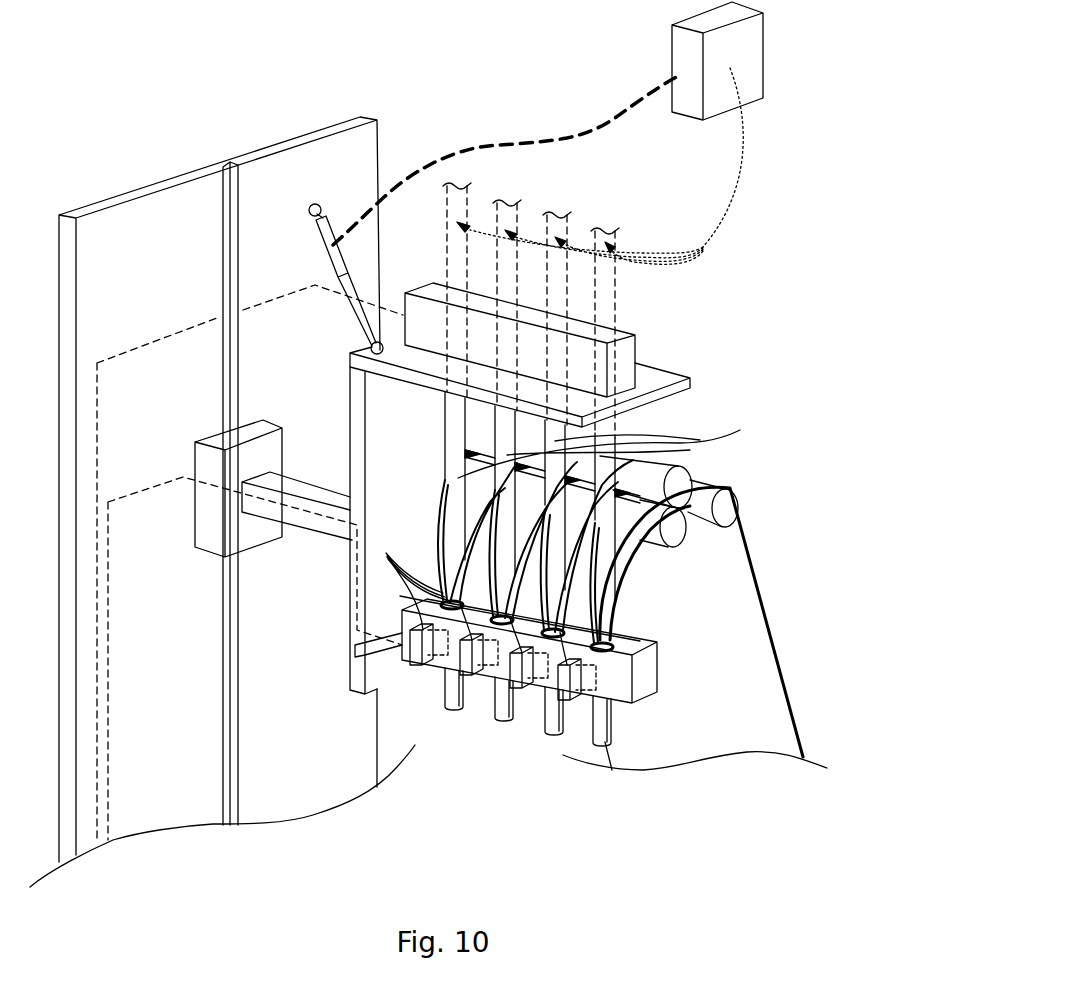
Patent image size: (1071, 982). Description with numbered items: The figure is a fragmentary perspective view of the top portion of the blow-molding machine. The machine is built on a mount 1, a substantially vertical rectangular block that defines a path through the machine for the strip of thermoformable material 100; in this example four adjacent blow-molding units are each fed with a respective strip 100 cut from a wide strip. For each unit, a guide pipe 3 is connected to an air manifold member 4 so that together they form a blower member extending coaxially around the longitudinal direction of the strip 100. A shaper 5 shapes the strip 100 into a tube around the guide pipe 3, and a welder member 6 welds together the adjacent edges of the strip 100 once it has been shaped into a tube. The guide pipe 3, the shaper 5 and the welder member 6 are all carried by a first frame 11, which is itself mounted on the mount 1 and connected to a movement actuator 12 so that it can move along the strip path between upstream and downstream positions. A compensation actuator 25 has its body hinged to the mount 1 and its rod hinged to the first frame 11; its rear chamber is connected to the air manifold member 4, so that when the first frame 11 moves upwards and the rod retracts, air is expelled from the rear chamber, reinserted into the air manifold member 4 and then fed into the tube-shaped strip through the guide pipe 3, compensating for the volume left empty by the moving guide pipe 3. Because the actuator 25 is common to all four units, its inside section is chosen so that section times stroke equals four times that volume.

The mount 1 is at (97, 235).
The actuator 25 is at (335, 220).
The movement actuator 12 is at (273, 443).
The air manifold member 4 is at (620, 328).
The first frame 11 is at (670, 377).
The guide pipe 3 is at (607, 428).
The welder member 6 is at (386, 553).
The shaper 5 is at (648, 670).
The strip of thermoformable material 100 is at (613, 592).